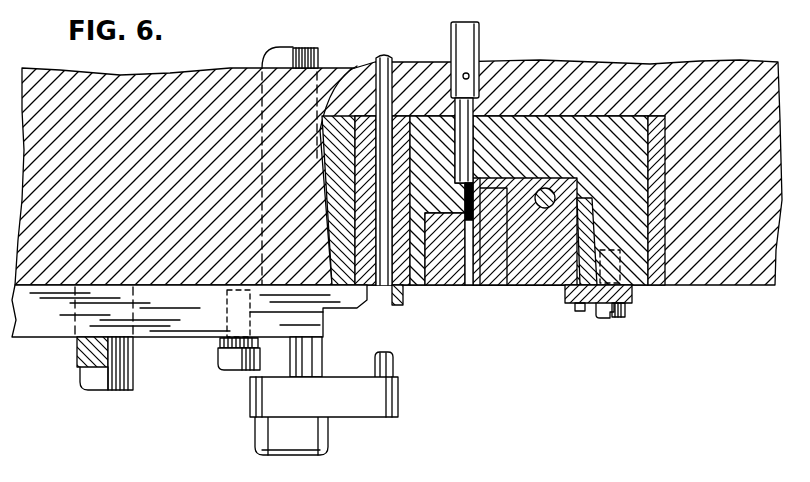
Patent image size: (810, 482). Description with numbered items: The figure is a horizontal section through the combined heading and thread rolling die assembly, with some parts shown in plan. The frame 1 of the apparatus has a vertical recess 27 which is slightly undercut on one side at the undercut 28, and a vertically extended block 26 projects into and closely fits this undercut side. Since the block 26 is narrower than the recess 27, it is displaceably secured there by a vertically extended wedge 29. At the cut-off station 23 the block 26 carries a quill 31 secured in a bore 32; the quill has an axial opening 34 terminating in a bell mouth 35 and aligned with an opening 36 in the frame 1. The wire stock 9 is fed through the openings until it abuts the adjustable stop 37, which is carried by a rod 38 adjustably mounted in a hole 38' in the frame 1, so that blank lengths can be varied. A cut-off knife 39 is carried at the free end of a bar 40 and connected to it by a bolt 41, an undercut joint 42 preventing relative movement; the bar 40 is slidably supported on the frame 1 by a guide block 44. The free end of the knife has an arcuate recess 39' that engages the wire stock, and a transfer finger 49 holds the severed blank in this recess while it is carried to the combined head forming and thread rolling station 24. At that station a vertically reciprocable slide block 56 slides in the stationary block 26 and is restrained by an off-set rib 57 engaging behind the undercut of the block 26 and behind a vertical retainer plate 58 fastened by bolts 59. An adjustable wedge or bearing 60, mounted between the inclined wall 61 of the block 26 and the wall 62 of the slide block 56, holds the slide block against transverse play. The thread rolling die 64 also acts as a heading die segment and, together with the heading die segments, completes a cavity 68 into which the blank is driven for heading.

The frame 1 is at (747, 273).
The wire stock 9 is at (378, 62).
The cut-off station 23 is at (396, 303).
The combined head forming and thread rolling station 24 is at (470, 288).
The block 26 is at (585, 120).
The vertical recess 27 is at (530, 114).
The undercut 28 is at (357, 66).
The vertically extended wedge 29 is at (657, 114).
The quill 31 is at (340, 162).
The bore 32 is at (350, 200).
The axial opening 34 is at (380, 233).
The bell mouth 35 is at (451, 70).
The opening 36 is at (386, 58).
The adjustable stop 37 is at (393, 368).
The rod 38 is at (305, 43).
The hole 38' is at (254, 54).
The cut-off knife 39 is at (302, 396).
The arcuate recess 39' is at (197, 311).
The bar 40 is at (147, 330).
The bolt 41 is at (220, 360).
The undercut joint 42 is at (195, 287).
The guide block 44 is at (77, 357).
The transfer finger 49 is at (403, 293).
The slide block 56 is at (545, 178).
The off-set rib 57 is at (442, 176).
The vertical retainer plate 58 is at (566, 302).
The bolts 59 is at (627, 314).
The adjustable wedge or bearing 60 is at (601, 256).
The inclined wall 61 is at (588, 200).
The wall 62 is at (575, 223).
The thread rolling die 64 is at (443, 290).
The cavity 68 is at (452, 287).